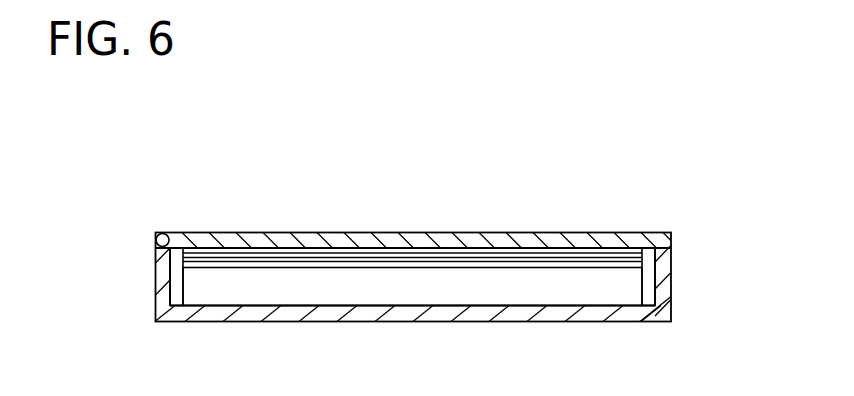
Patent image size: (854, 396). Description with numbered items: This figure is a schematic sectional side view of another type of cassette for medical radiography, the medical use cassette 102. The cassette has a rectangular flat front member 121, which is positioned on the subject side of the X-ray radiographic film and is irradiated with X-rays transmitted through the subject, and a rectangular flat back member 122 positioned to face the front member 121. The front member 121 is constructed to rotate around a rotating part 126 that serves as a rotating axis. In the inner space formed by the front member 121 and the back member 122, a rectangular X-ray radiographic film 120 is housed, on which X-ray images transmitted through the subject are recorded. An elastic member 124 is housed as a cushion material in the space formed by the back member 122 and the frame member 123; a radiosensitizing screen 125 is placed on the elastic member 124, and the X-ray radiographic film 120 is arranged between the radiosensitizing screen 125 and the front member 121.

The medical use cassette 102 is at (662, 204).
The X-ray radiographic film 120 is at (313, 255).
The front member 121 is at (530, 238).
The back member 122 is at (228, 323).
The frame member 123 is at (160, 285).
The elastic member 124 is at (362, 292).
The radiosensitizing screen 125 is at (410, 262).
The rotating part 126 is at (163, 233).